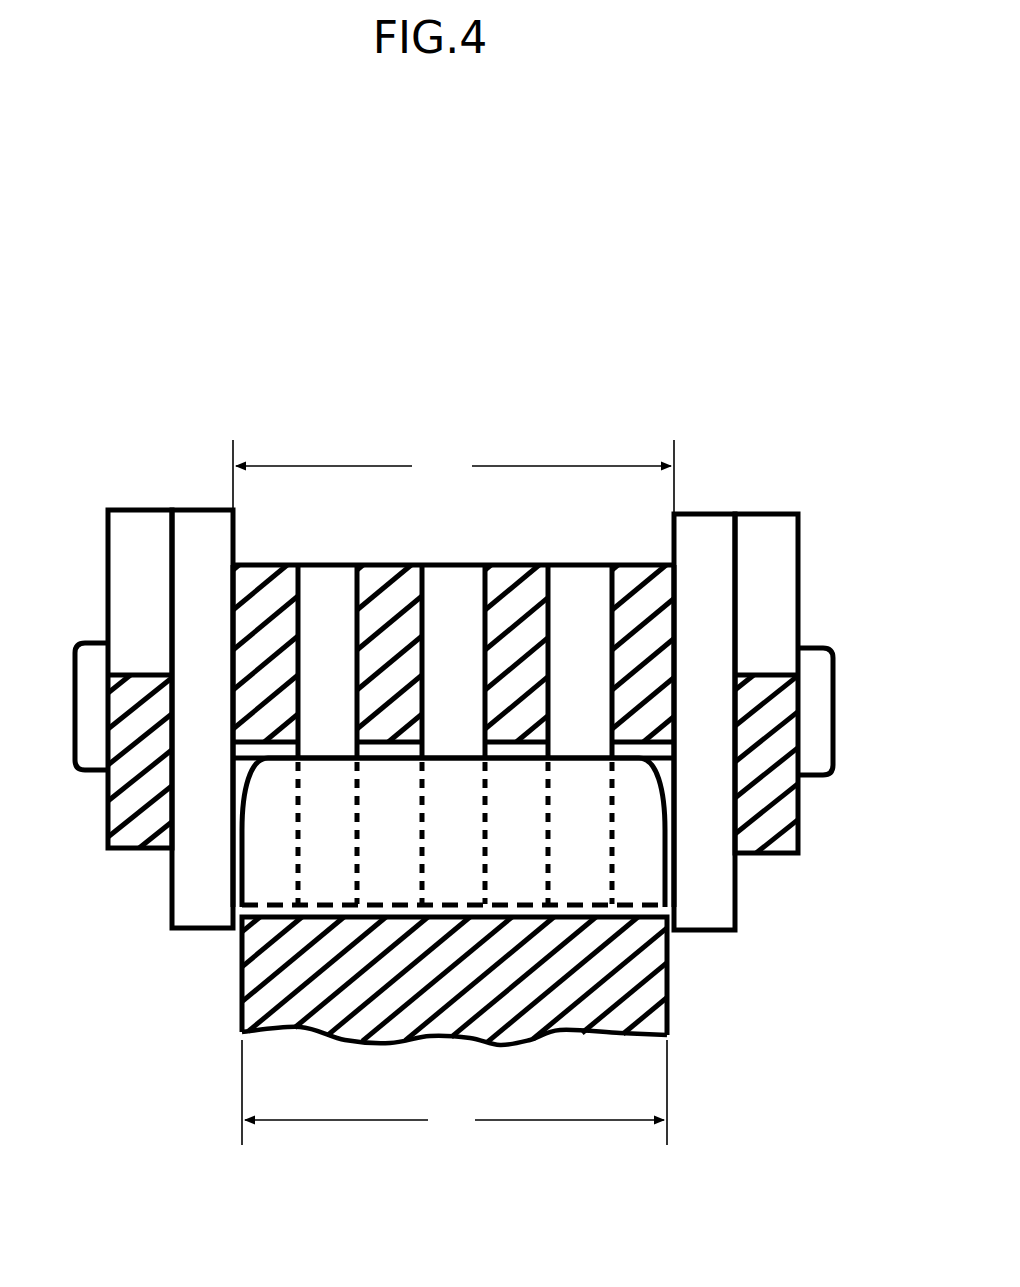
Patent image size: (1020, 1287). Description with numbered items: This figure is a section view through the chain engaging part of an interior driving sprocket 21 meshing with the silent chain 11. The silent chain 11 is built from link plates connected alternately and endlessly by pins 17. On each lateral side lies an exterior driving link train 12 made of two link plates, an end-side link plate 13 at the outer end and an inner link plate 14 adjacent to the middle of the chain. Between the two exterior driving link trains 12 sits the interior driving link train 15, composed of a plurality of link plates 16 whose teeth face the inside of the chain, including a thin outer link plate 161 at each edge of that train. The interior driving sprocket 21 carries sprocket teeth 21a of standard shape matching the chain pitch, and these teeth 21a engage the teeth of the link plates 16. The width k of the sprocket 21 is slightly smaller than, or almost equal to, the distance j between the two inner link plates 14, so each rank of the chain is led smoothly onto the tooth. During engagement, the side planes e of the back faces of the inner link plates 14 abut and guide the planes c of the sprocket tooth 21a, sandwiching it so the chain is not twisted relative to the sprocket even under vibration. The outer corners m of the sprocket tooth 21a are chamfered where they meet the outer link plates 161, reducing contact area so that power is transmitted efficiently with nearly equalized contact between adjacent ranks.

The silent chain 11 is at (803, 497).
The exterior driving link train 12 is at (78, 397).
The end-side link plate 13 is at (138, 527).
The inner link plate 14 is at (212, 530).
The interior driving link train 15 is at (472, 405).
The link plate 16 is at (513, 570).
The outer link plate 161 is at (255, 588).
The pin 17 is at (813, 718).
The interior driving sprocket 21 is at (323, 1017).
The sprocket tooth 21a is at (263, 815).
The distance between inner link plates j is at (453, 476).
The width of the sprocket k is at (454, 1092).
The outer corner of the sprocket tooth m is at (252, 777).
The plane of the sprocket tooth c is at (230, 872).
The side plane of the back face e is at (670, 947).